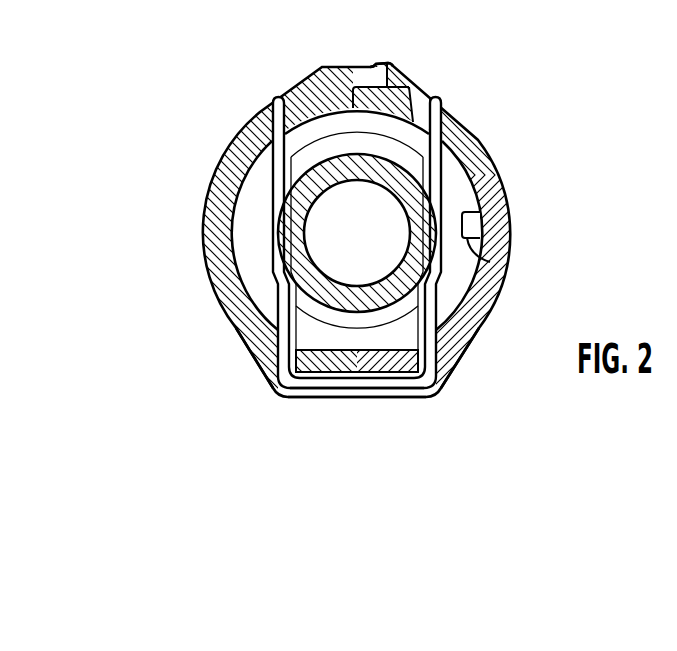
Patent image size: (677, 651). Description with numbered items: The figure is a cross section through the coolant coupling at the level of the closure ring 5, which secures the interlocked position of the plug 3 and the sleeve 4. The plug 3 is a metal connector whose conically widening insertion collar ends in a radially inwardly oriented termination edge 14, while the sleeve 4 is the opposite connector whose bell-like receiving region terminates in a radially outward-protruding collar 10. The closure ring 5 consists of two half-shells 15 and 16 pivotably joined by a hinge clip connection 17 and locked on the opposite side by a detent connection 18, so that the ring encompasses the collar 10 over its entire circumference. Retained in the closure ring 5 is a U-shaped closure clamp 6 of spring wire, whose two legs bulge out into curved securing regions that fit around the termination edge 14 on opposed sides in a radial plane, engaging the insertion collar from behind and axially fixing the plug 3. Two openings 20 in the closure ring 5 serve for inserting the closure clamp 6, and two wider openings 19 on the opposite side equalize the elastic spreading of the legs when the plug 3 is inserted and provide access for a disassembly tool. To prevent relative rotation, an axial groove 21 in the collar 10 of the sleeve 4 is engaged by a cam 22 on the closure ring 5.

The plug 3 is at (292, 214).
The sleeve 4 is at (253, 262).
The closure ring 5 is at (498, 138).
The closure clamp 6 is at (387, 388).
The collar 10 is at (263, 183).
The termination edge 14 is at (340, 147).
The half-shell 15 is at (489, 292).
The half-shell 16 is at (236, 303).
The hinge clip connection 17 is at (400, 70).
The detent connection 18 is at (332, 402).
The openings 19 is at (262, 120).
The openings 20 is at (253, 350).
The axial groove 21 is at (490, 247).
The cam 22 is at (484, 225).